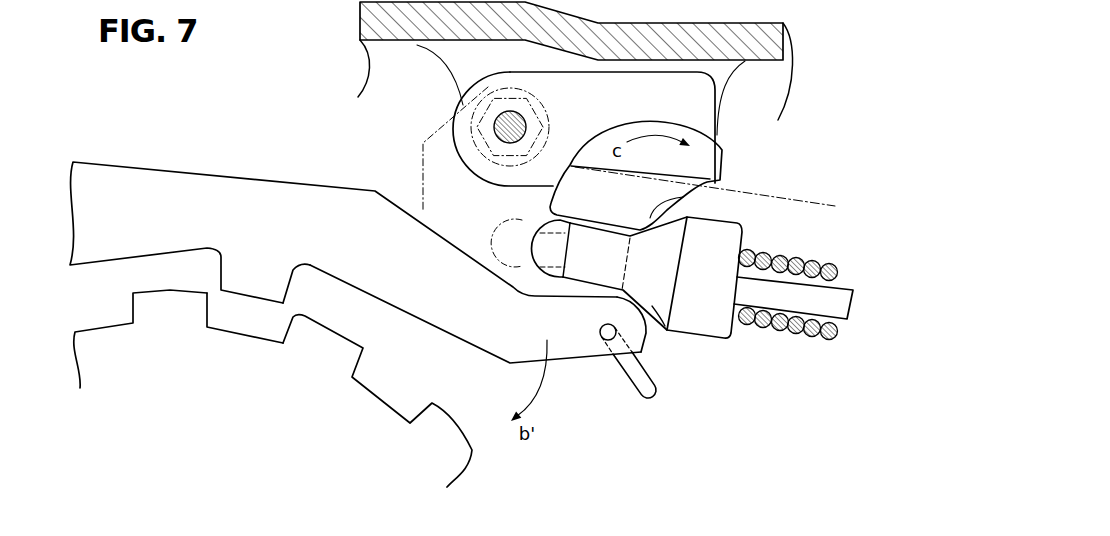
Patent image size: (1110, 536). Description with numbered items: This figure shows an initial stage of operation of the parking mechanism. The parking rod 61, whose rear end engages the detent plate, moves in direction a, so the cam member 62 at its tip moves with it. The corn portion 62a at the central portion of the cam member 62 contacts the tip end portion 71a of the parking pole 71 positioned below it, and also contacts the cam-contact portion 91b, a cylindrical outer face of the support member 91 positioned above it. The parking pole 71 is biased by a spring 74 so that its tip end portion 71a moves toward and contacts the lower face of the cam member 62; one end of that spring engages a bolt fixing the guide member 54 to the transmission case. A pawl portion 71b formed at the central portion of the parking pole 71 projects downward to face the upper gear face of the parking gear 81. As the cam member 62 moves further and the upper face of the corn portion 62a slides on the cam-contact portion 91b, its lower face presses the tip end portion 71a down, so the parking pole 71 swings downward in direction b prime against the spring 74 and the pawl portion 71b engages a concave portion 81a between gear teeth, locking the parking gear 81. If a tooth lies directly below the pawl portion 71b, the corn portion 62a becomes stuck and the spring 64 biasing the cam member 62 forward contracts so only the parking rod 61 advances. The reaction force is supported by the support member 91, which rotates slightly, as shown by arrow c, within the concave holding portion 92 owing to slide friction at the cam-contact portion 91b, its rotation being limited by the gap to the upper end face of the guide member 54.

The guide member 54 is at (827, 205).
The parking rod 61 is at (793, 287).
The cam member 62 is at (713, 356).
The corn portion 62a is at (652, 306).
The spring 64 is at (811, 340).
The parking pole 71 is at (250, 188).
The tip end portion 71a is at (586, 340).
The pawl portion 71b is at (277, 277).
The spring 74 is at (633, 388).
The parking gear 81 is at (443, 463).
The concave portion 81a is at (240, 333).
The support member 91 is at (734, 162).
The cam-contact portion 91b is at (665, 222).
The concave holding portion 92 is at (690, 123).